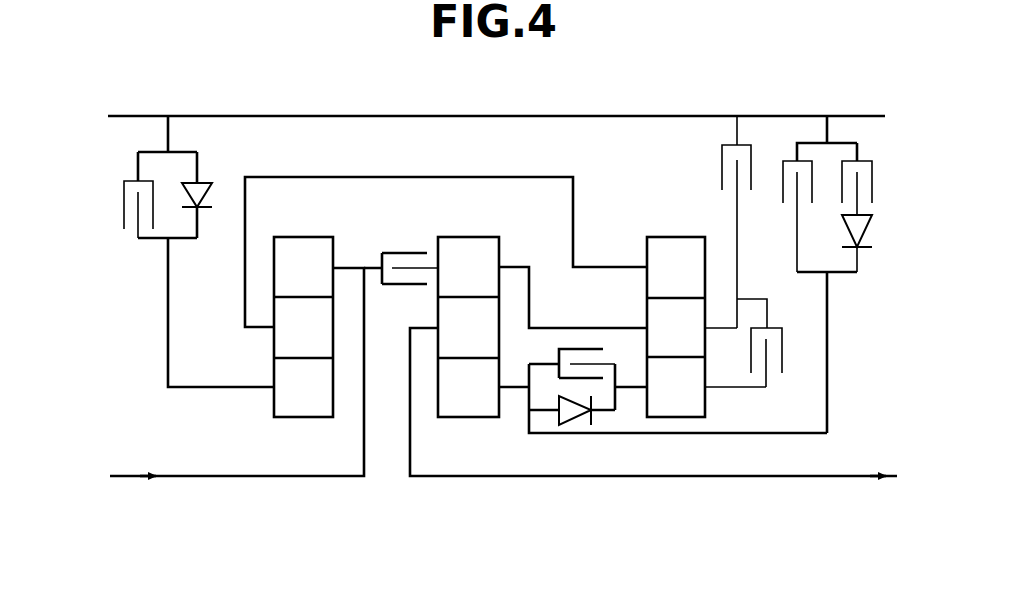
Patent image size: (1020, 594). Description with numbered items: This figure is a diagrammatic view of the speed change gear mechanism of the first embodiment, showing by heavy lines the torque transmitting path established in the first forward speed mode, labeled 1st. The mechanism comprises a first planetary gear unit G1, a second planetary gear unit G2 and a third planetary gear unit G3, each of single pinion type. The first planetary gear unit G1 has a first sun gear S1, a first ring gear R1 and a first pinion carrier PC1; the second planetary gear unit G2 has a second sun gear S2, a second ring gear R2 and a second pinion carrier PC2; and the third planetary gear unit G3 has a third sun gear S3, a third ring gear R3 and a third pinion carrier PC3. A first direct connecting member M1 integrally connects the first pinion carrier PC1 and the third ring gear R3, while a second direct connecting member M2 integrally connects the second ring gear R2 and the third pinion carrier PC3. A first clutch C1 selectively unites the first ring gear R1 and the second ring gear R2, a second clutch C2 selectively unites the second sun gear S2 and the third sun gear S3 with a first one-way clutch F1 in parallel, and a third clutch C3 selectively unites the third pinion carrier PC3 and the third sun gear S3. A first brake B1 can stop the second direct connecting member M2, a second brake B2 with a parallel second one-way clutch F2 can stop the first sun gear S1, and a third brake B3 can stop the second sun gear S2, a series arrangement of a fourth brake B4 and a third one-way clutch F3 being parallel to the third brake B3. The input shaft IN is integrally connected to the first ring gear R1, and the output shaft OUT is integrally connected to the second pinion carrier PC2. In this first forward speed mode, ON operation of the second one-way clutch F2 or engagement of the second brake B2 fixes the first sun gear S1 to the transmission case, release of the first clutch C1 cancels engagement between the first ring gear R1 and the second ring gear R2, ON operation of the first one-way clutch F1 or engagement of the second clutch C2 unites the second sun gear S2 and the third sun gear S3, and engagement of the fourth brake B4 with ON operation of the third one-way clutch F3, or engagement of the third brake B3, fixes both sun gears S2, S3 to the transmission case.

The first shaft / input line 1st is at (474, 117).
The second brake B2 is at (187, 251).
The second one-way clutch F2 is at (207, 195).
The first direct connecting member M1 is at (445, 176).
The first planetary gear unit G1 is at (301, 235).
The first ring gear R1 is at (303, 267).
The first pinion carrier PC1 is at (303, 327).
The first sun gear S1 is at (303, 387).
The first clutch C1 is at (401, 255).
The second planetary gear unit G2 is at (472, 235).
The second ring gear R2 is at (468, 267).
The second pinion carrier PC2 is at (468, 327).
The second sun gear S2 is at (468, 387).
The second direct connecting member M2 is at (514, 266).
The second clutch C2 is at (573, 348).
The first one-way clutch F1 is at (578, 427).
The third planetary gear unit G3 is at (670, 235).
The third ring gear R3 is at (676, 267).
The third pinion carrier PC3 is at (676, 327).
The third sun gear S3 is at (676, 387).
The first brake B1 is at (719, 222).
The third clutch C3 is at (743, 357).
The third brake B3 is at (812, 274).
The fourth brake B4 is at (874, 179).
The third one-way clutch F3 is at (874, 243).
The input shaft IN is at (205, 475).
The output shaft OUT is at (848, 475).